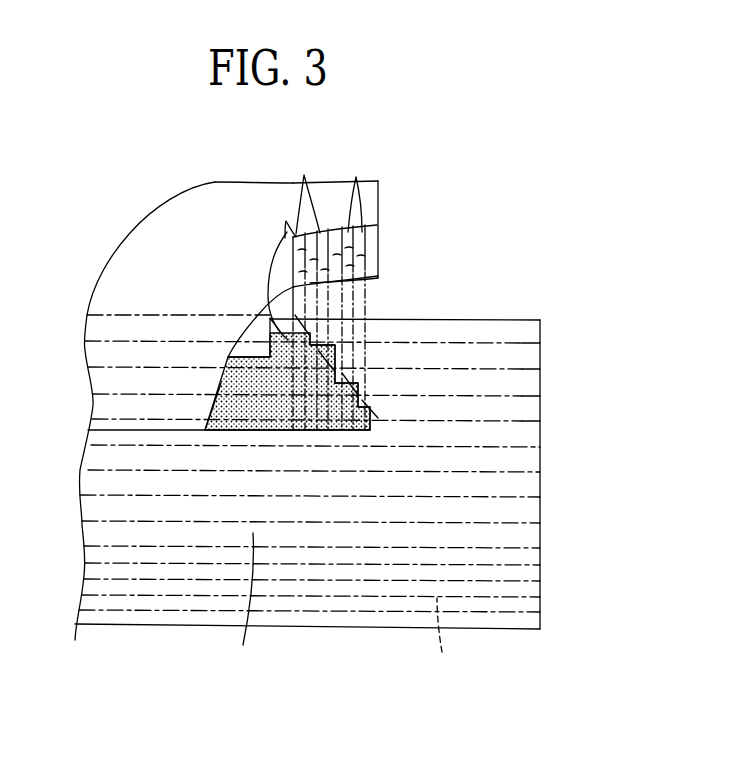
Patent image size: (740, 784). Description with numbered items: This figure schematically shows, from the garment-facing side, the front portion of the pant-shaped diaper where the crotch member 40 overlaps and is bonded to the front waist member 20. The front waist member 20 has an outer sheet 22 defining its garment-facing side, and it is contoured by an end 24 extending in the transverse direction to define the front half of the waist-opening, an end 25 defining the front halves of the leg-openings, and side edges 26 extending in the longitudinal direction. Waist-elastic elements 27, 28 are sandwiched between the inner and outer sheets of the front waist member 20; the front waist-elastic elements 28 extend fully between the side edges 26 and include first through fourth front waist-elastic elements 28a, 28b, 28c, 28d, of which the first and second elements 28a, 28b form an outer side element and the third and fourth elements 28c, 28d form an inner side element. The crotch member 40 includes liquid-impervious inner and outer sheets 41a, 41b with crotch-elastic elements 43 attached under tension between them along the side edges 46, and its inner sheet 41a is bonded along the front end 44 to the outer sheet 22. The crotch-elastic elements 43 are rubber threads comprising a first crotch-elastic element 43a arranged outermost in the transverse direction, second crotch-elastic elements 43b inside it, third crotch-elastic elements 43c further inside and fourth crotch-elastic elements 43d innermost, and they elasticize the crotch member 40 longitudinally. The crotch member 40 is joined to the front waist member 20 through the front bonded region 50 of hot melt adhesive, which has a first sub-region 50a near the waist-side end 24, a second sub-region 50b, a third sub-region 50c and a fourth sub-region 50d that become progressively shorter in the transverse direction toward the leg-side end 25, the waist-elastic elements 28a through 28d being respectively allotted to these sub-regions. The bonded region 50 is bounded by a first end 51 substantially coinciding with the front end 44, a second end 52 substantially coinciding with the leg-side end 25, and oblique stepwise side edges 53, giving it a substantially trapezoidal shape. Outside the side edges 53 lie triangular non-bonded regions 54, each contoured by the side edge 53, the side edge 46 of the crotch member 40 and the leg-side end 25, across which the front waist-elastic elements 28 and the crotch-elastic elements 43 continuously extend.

The front waist member 20 is at (526, 654).
The outer sheet 22 is at (242, 603).
The end 24 is at (300, 627).
The end 25 is at (427, 318).
The side edges 26 is at (543, 490).
The waist-elastic elements 27 is at (441, 642).
The front waist-elastic elements 28 is at (475, 343).
The first front waist-elastic element 28a is at (523, 429).
The second front waist-elastic element 28b is at (523, 404).
The third front waist-elastic element 28c is at (523, 378).
The fourth front waist-elastic element 28d is at (523, 352).
The crotch member 40 is at (388, 156).
The inner sheet 41a is at (335, 240).
The outer sheet 41b is at (237, 203).
The crotch-elastic elements 43 is at (357, 242).
The first crotch-elastic element 43a is at (357, 227).
The second crotch-elastic elements 43b is at (357, 188).
The third crotch-elastic elements 43c is at (303, 189).
The fourth crotch-elastic elements 43d is at (284, 231).
The front end 44 is at (123, 432).
The side edges 46 is at (381, 198).
The front bonded region 50 is at (265, 433).
The first sub-region 50a is at (213, 412).
The second sub-region 50b is at (222, 384).
The third sub-region 50c is at (255, 362).
The fourth sub-region 50d is at (273, 282).
The first end 51 is at (236, 423).
The second end 52 is at (280, 335).
The side edges 53 is at (370, 406).
The non-bonded regions 54 is at (350, 356).